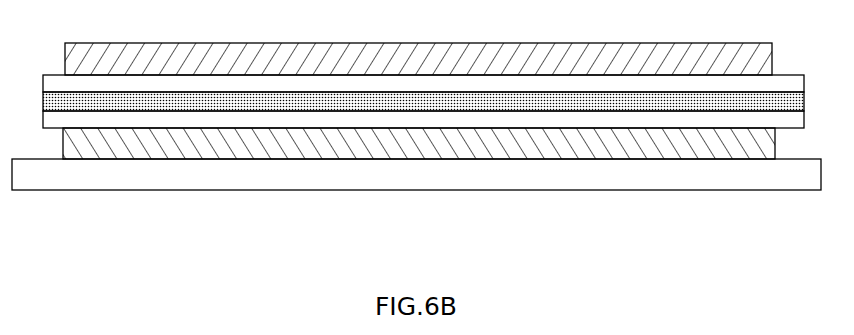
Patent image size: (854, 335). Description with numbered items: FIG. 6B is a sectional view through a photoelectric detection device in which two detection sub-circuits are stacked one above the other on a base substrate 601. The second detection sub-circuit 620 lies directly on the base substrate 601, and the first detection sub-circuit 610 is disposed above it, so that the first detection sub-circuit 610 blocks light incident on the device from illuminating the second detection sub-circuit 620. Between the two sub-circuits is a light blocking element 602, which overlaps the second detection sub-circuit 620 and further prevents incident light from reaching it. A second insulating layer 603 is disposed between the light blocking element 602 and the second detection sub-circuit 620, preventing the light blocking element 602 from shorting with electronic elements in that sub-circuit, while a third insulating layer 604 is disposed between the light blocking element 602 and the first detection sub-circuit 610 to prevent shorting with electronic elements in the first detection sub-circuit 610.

The base substrate 601 is at (160, 175).
The light blocking element 602 is at (601, 105).
The second insulating layer 603 is at (393, 122).
The third insulating layer 604 is at (422, 87).
The first detection sub-circuit 610 is at (190, 57).
The second detection sub-circuit 620 is at (533, 142).